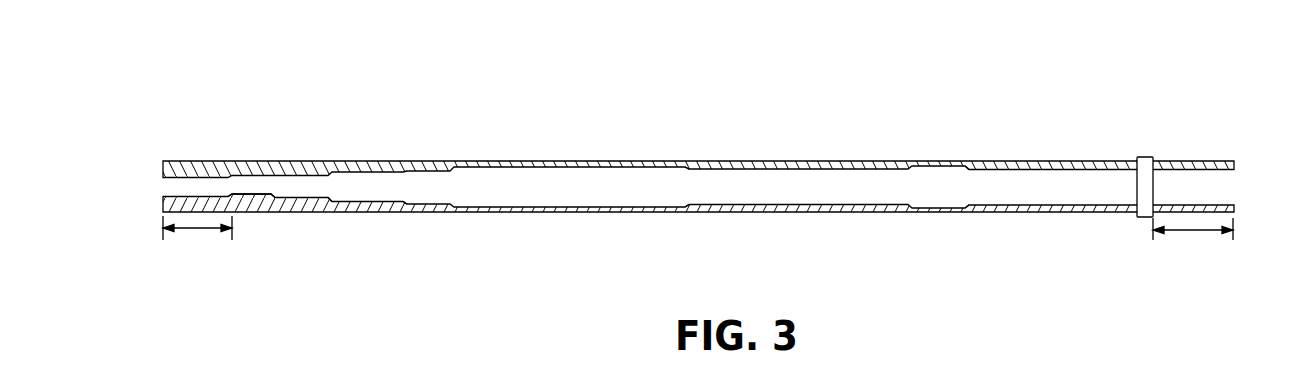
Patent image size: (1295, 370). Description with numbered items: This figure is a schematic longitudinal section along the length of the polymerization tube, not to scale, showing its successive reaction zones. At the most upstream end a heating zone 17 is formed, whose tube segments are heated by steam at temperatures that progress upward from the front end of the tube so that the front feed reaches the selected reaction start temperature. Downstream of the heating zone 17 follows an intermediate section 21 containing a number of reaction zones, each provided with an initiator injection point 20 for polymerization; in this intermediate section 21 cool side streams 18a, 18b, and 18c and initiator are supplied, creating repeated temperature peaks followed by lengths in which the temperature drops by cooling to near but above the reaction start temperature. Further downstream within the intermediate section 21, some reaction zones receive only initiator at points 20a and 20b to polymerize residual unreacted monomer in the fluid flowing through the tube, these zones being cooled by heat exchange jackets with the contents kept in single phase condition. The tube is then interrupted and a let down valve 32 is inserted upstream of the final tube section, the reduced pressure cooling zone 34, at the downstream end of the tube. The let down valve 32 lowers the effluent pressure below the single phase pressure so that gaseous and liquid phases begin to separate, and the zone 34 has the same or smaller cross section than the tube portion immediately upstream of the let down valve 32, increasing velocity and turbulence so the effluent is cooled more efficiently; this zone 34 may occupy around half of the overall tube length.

The heating zone 17 is at (198, 231).
The cool side stream 18a is at (275, 224).
The cool side stream 18b is at (325, 225).
The cool side stream 18c is at (400, 225).
The initiator injection point 20 is at (229, 148).
The initiator injection point 20a is at (692, 148).
The initiator injection point 20b is at (975, 148).
The intermediate section 21 is at (582, 223).
The let down valve 32 is at (1141, 144).
The reduced pressure cooling zone 34 is at (1200, 243).